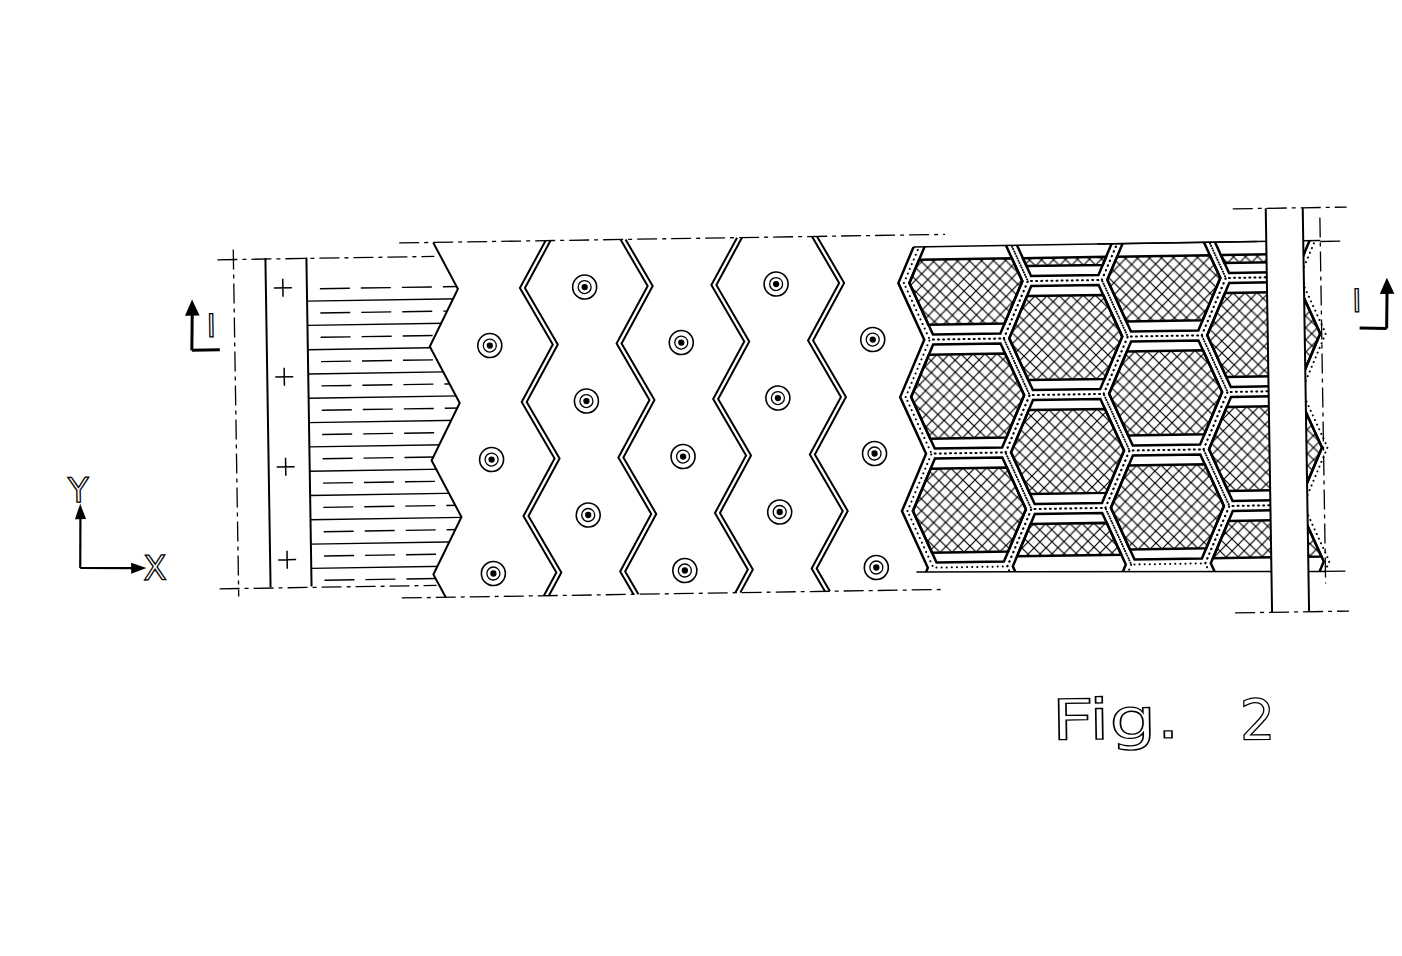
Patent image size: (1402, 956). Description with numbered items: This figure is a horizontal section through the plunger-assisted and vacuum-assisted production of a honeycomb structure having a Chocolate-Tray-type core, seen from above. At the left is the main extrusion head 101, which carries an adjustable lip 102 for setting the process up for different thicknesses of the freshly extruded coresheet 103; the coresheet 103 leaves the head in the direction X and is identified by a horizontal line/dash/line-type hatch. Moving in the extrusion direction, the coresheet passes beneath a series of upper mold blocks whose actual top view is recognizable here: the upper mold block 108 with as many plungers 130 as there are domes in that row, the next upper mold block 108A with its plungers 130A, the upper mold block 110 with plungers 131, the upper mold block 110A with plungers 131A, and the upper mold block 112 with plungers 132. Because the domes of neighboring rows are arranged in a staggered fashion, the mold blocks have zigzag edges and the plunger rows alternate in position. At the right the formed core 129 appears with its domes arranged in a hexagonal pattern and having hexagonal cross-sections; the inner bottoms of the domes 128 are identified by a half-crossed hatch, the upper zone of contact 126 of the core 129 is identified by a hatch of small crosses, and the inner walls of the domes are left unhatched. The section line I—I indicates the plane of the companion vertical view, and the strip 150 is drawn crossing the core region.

The main extrusion head 101 is at (254, 265).
The adjustable lip 102 is at (290, 264).
The freshly extruded coresheet 103 is at (372, 266).
The upper mold block 108 is at (494, 267).
The next upper mold block 108A is at (600, 574).
The upper mold block 110 is at (695, 269).
The upper mold block 110A is at (795, 573).
The upper mold block 112 is at (877, 267).
The upper zone of contact 126 is at (1026, 252).
The inner bottoms of the domes 128 is at (1054, 316).
The core 129 is at (1182, 218).
The plungers 130 is at (489, 335).
The plungers 130A is at (583, 524).
The plungers 131 is at (674, 328).
The plungers 131A is at (775, 522).
The plungers 132 is at (871, 334).
The backing strip 150 is at (1293, 240).